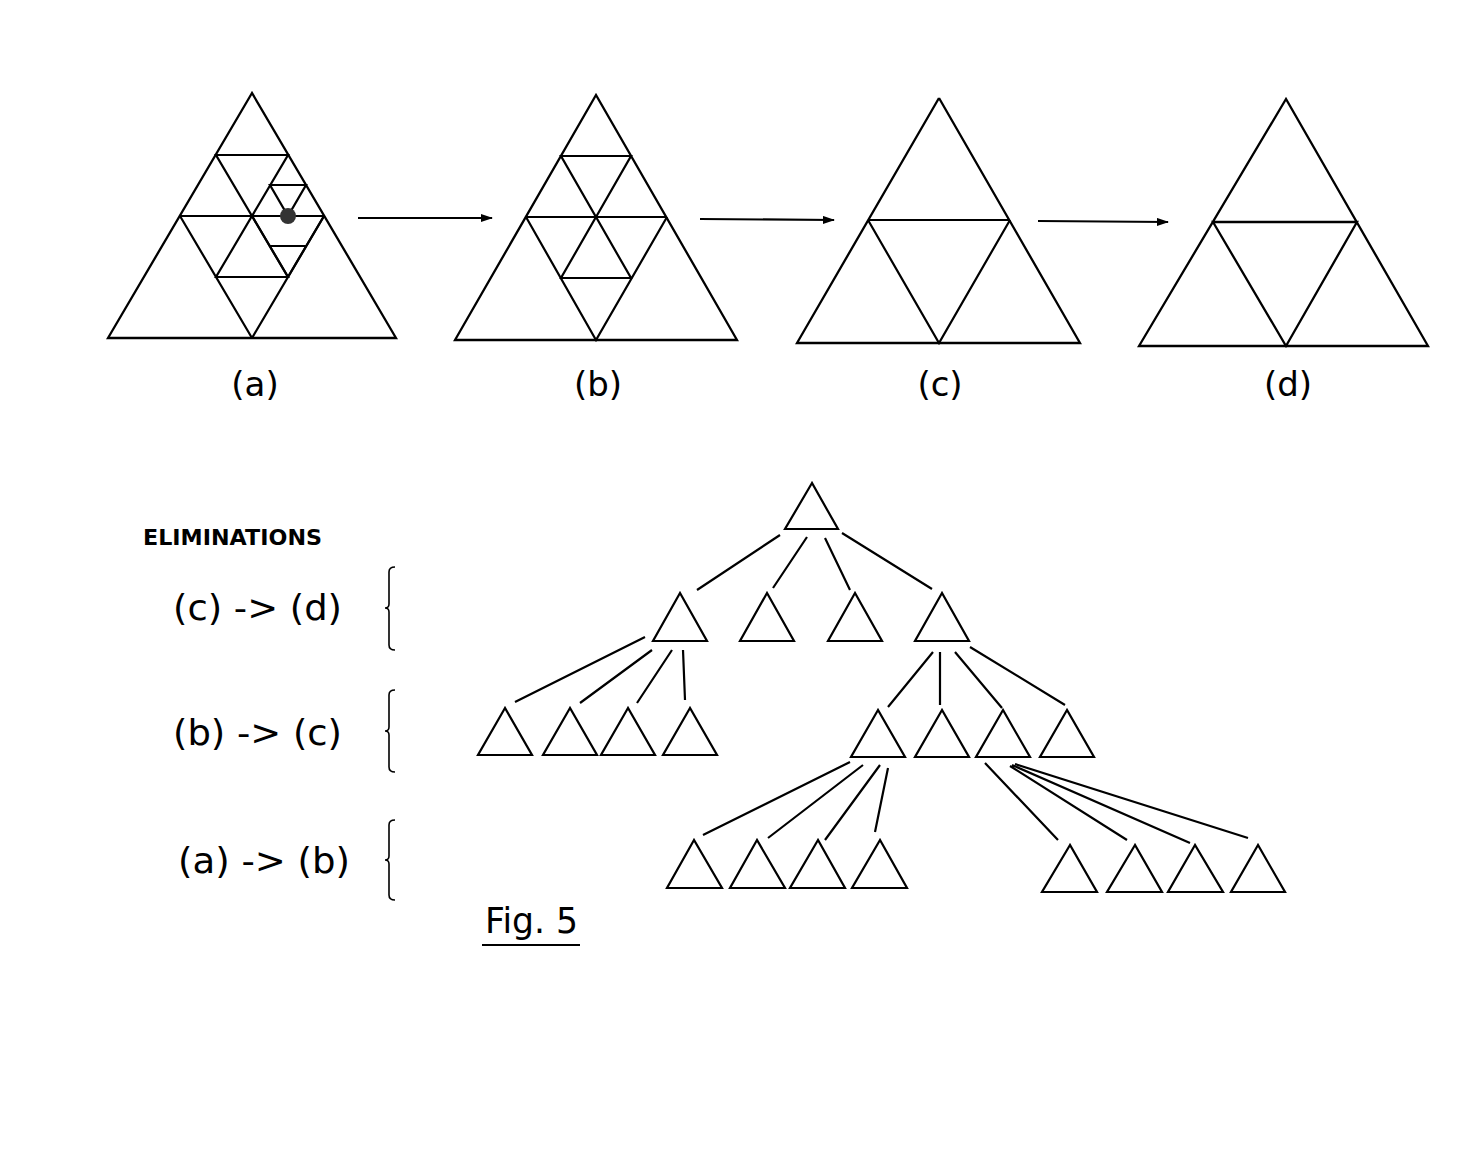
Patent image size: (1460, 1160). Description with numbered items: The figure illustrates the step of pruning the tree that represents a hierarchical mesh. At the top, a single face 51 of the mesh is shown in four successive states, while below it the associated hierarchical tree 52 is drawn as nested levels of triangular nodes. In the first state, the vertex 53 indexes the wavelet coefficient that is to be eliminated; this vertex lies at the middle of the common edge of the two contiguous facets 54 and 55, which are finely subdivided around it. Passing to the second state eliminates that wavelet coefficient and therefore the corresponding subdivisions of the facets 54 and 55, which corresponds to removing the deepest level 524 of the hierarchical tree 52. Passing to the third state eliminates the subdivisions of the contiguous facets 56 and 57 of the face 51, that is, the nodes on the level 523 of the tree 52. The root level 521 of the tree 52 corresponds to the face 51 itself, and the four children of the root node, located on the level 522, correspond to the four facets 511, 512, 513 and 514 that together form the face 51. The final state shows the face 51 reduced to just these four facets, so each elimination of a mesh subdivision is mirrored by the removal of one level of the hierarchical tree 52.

The face 51 is at (180, 338).
The hierarchical tree 52 is at (959, 687).
The vertex 53 is at (297, 213).
The facet 54 is at (289, 178).
The facet 55 is at (287, 260).
The facet 56 is at (562, 197).
The facet 57 is at (638, 245).
The facet 511 is at (967, 190).
The facet 512 is at (1008, 323).
The facet 513 is at (898, 243).
The facet 514 is at (865, 320).
The level of the tree 521 is at (832, 505).
The level of the hierarchical tree 522 is at (962, 615).
The level of the hierarchical tree 523 is at (1087, 732).
The level of the hierarchical tree 524 is at (1278, 863).